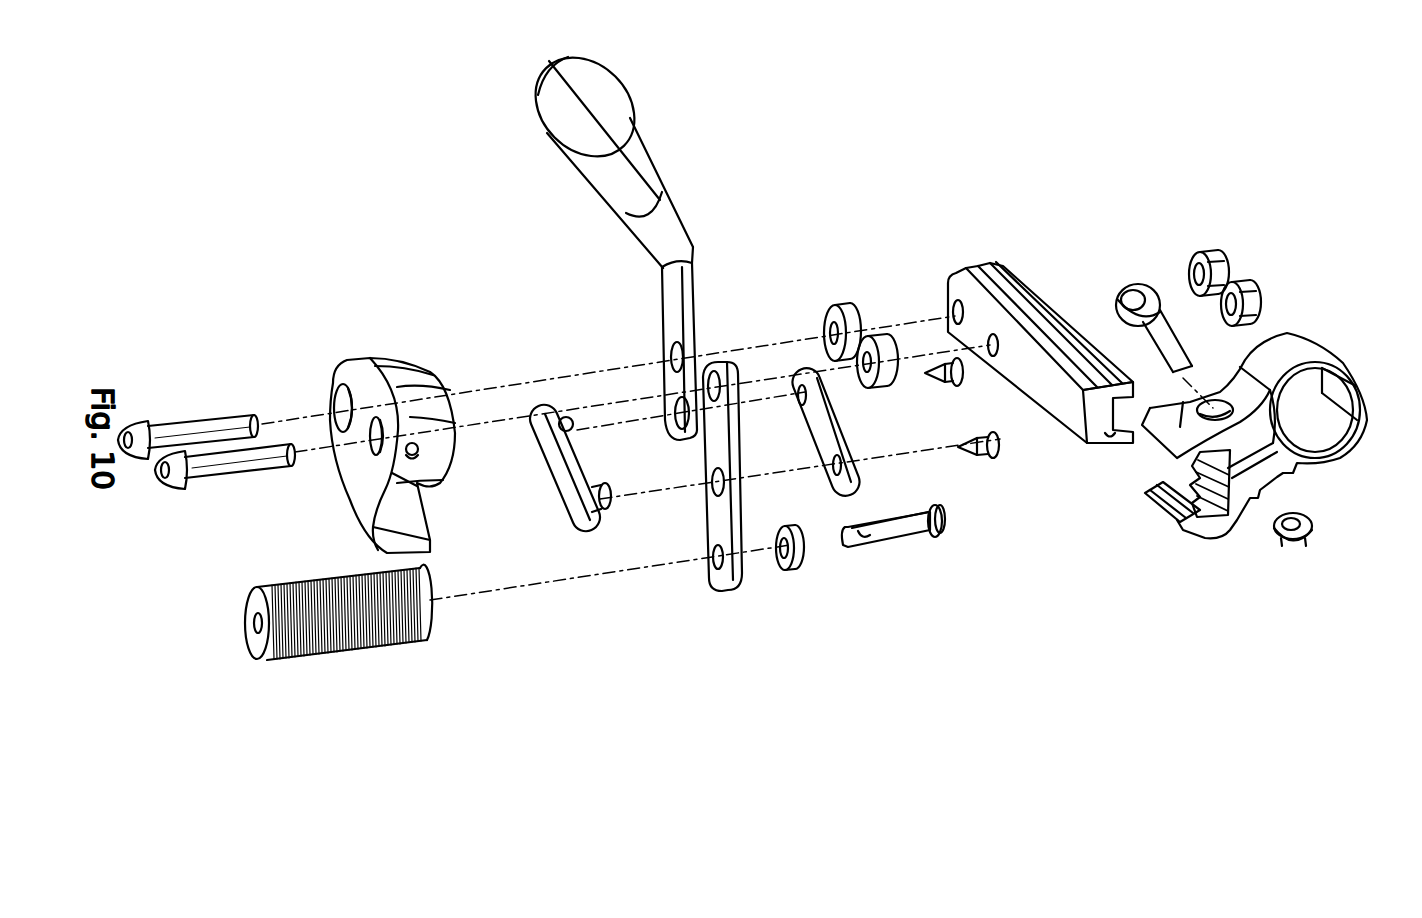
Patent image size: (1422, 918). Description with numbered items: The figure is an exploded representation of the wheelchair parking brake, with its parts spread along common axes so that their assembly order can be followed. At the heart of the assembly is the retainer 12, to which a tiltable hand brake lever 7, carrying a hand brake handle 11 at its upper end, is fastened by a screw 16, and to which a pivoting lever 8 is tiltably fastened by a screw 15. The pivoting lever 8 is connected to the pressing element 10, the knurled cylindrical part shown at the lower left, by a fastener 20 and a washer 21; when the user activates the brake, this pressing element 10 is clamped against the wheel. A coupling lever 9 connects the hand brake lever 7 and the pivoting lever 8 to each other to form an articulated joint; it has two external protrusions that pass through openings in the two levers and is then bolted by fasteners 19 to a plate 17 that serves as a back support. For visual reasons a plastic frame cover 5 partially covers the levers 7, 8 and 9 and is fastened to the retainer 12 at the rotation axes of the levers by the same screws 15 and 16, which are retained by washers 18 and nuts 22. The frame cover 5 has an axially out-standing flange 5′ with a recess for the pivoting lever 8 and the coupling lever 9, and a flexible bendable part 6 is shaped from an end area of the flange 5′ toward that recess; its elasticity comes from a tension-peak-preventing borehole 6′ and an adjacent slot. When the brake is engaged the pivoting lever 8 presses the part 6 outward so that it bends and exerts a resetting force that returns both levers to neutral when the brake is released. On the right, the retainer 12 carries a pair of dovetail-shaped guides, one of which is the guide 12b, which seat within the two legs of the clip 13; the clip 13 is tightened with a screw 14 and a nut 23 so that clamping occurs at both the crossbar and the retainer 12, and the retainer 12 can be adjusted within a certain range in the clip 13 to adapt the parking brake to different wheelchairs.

The frame cover 5 is at (390, 348).
The flange 5′ is at (405, 368).
The flexible bendable part 6 is at (442, 460).
The tension-peak-preventing borehole 6′ is at (402, 450).
The hand brake lever 7 is at (592, 239).
The pivoting lever 8 is at (718, 517).
The coupling lever 9 is at (565, 477).
The pressing element 10 is at (258, 652).
The hand brake handle 11 is at (573, 125).
The retainer 12 is at (1040, 323).
The dove tail shaped guide 12b is at (1115, 452).
The clip 13 is at (1293, 358).
The screw 14 is at (1147, 297).
The screw 15 is at (223, 462).
The screw 16 is at (207, 430).
The plate 17 is at (815, 420).
The washers 18 is at (848, 320).
The fasteners 19 is at (945, 370).
The fastener 20 is at (902, 525).
The washer 21 is at (787, 562).
The nuts 22 is at (1222, 257).
The nut 23 is at (1310, 524).